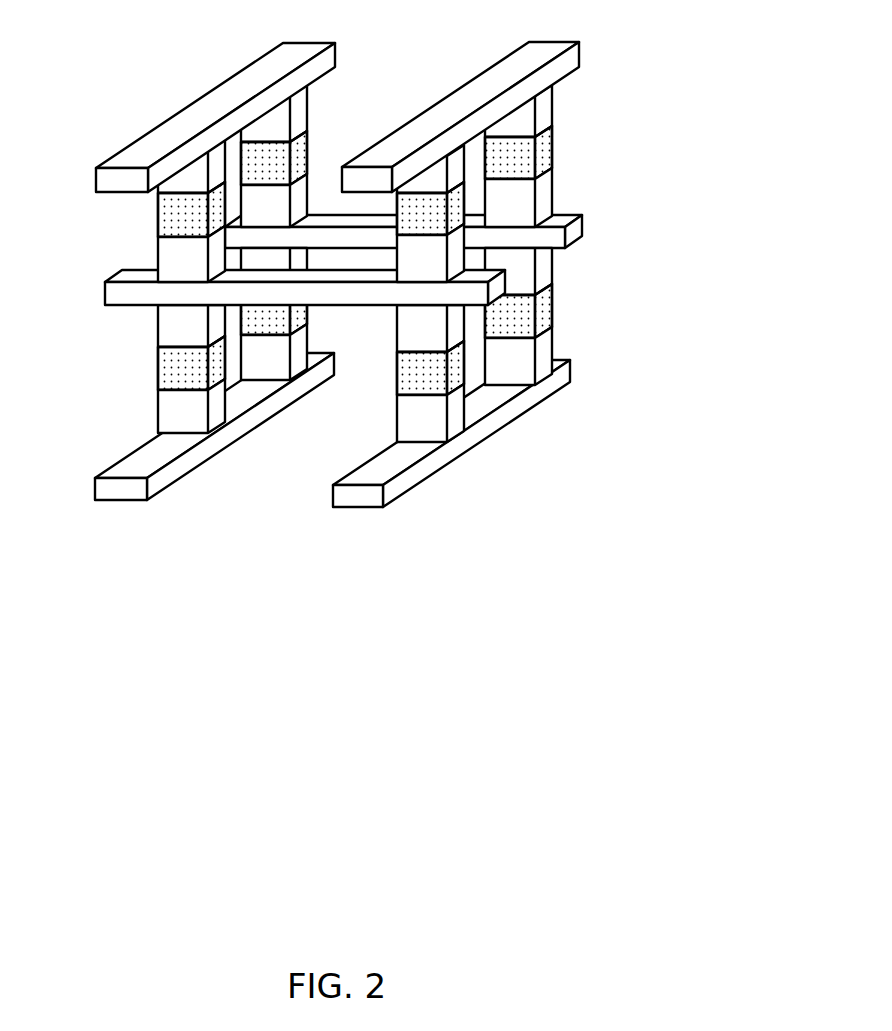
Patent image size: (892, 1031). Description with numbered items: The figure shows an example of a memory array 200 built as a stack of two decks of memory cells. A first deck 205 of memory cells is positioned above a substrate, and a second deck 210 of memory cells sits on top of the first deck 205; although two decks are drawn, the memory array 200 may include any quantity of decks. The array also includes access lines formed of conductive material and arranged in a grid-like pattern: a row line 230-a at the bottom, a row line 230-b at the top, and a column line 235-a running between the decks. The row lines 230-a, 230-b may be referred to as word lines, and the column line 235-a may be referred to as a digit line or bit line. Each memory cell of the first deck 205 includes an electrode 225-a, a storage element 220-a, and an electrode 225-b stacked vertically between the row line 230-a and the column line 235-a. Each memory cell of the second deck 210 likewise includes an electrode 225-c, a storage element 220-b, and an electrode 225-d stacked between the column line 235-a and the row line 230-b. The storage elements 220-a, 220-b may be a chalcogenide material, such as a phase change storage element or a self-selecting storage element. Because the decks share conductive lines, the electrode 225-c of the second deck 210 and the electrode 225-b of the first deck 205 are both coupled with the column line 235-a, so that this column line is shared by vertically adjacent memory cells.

The memory array 200 is at (441, 460).
The first deck 205 is at (633, 230).
The second deck 210 is at (633, 75).
The storage element 220-a is at (543, 314).
The storage element 220-b is at (543, 159).
The electrode 225-a is at (543, 352).
The electrode 225-b is at (543, 276).
The electrode 225-c is at (543, 197).
The electrode 225-d is at (543, 122).
The row line 230-a is at (380, 467).
The row line 230-b is at (462, 107).
The column line 235-a is at (125, 306).